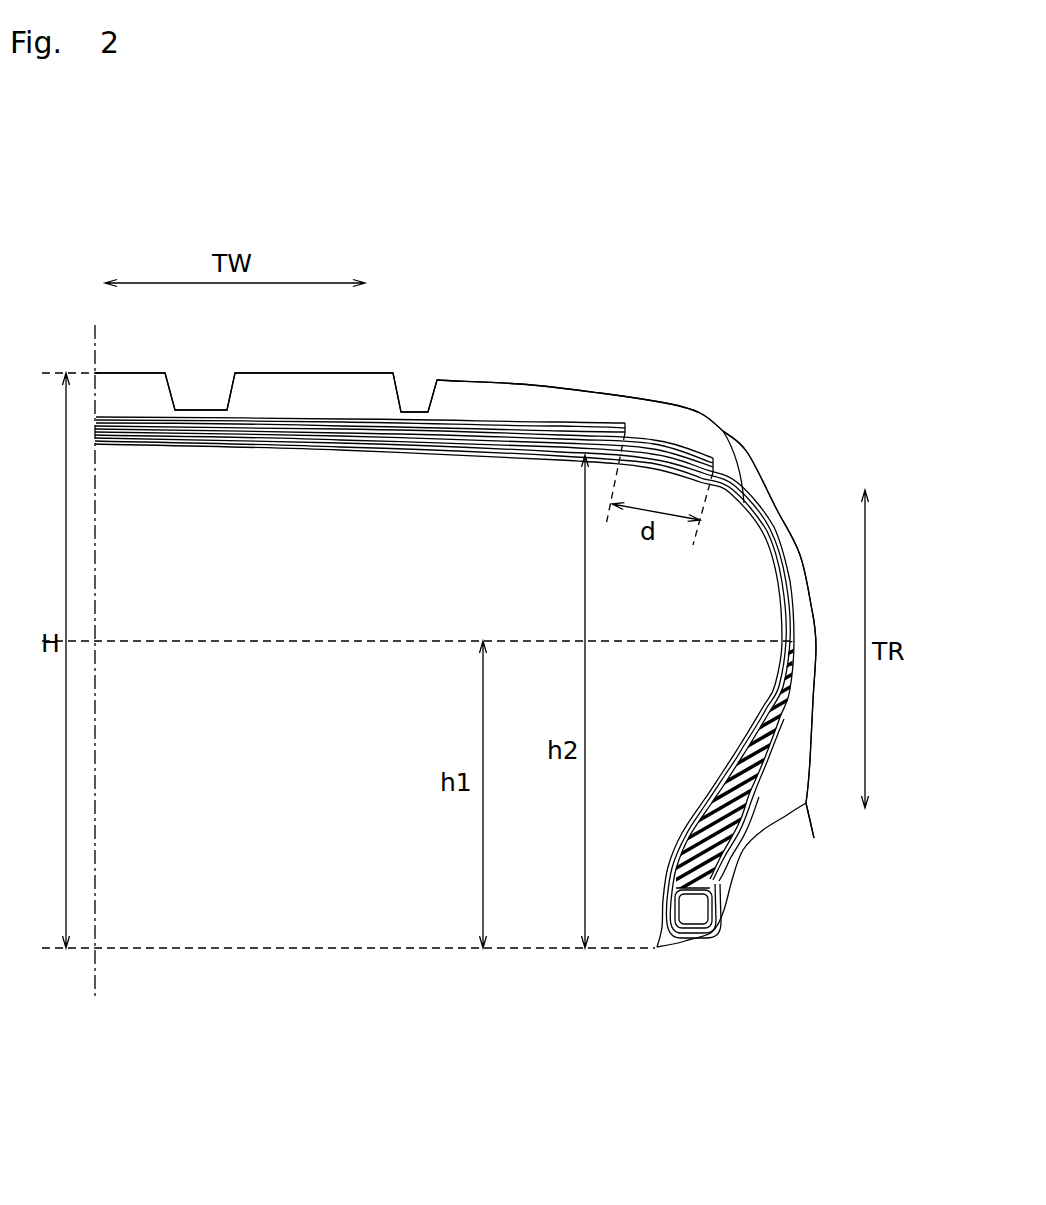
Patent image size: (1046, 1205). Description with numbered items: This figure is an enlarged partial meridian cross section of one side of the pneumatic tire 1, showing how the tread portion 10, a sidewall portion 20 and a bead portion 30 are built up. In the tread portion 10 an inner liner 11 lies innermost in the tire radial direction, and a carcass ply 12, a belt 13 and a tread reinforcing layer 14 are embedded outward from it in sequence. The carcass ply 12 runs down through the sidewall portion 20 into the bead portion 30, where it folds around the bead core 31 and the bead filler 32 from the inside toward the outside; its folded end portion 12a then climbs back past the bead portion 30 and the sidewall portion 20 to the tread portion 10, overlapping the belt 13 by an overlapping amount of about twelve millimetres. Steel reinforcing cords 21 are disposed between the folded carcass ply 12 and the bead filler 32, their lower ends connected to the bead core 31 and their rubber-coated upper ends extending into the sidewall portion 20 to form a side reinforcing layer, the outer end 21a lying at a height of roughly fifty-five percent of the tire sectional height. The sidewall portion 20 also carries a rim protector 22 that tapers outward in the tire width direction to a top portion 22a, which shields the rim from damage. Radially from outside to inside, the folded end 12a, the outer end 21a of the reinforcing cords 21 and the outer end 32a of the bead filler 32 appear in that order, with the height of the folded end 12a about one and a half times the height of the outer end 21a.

The pneumatic tire 1 is at (796, 388).
The tread portion 10 is at (504, 395).
The inner liner 11 is at (212, 447).
The carcass ply 12 is at (312, 447).
The end portion of the folded carcass ply 12a is at (625, 433).
The belt 13 is at (400, 450).
The tread reinforcing layer 14 is at (494, 448).
The sidewall portion 20 is at (778, 510).
The reinforcing cords 21 is at (723, 773).
The outer end of the reinforcing cord 21a is at (785, 625).
The rim protector 22 is at (808, 808).
The top portion of the rim protector 22a is at (856, 851).
The bead portion 30 is at (733, 867).
The bead core 31 is at (697, 920).
The bead filler 32 is at (685, 832).
The outer end of the bead filler 32a is at (780, 683).